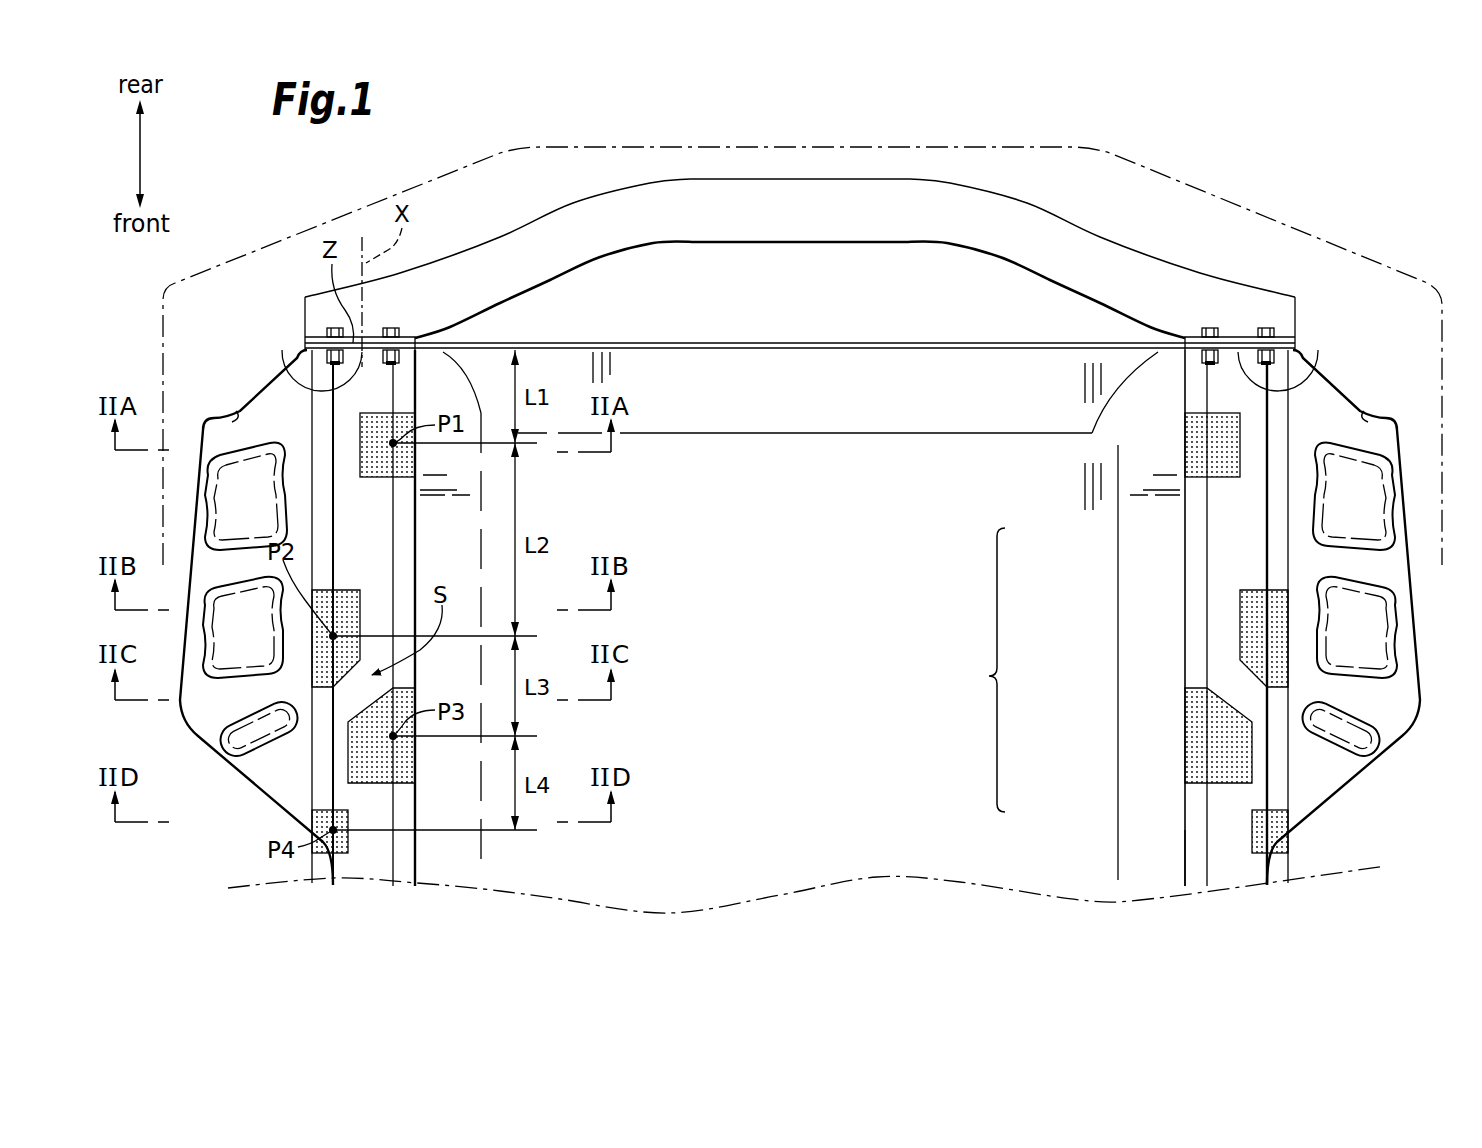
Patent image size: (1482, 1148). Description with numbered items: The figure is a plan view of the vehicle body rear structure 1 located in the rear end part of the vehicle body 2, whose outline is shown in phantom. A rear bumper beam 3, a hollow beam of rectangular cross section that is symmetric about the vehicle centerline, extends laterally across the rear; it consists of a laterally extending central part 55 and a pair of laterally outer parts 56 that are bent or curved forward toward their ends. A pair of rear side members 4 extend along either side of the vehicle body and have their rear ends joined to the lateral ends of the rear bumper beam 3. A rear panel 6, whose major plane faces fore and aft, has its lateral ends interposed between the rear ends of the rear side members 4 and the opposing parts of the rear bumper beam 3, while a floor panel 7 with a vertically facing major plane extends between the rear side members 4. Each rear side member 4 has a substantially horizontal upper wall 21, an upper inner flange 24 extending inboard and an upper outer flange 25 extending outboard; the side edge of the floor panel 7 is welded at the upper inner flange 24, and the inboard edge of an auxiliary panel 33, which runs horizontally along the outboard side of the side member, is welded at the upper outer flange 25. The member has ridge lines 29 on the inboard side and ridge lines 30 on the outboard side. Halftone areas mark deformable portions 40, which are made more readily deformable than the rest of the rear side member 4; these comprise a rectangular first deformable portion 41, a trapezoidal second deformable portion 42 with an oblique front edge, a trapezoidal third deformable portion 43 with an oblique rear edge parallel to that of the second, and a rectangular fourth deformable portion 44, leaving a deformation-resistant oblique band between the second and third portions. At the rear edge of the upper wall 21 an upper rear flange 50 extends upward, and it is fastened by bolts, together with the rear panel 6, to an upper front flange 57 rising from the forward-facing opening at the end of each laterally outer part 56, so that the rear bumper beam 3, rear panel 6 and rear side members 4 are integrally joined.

The vehicle body rear structure 1 is at (1220, 147).
The vehicle body 2 is at (1260, 213).
The rear bumper beam 3 is at (800, 218).
The rear side member 4 is at (312, 403).
The rear panel 6 is at (905, 342).
The floor panel 7 is at (812, 382).
The upper wall 21 is at (375, 850).
The upper inner flange 24 is at (1197, 848).
The upper outer flange 25 is at (1350, 403).
The ridge lines on the inboard side 29 is at (415, 527).
The ridge lines on the outboard side 30 is at (332, 497).
The auxiliary panel 33 is at (238, 413).
The deformable portions 40 is at (800, 649).
The first deformable portion 41 is at (380, 427).
The second deformable portion 42 is at (350, 613).
The third deformable portion 43 is at (375, 760).
The fourth deformable portion 44 is at (334, 840).
The upper rear flange 50 is at (320, 385).
The central part 55 is at (748, 206).
The laterally outer part 56 is at (520, 250).
The upper front flange 57 is at (405, 335).